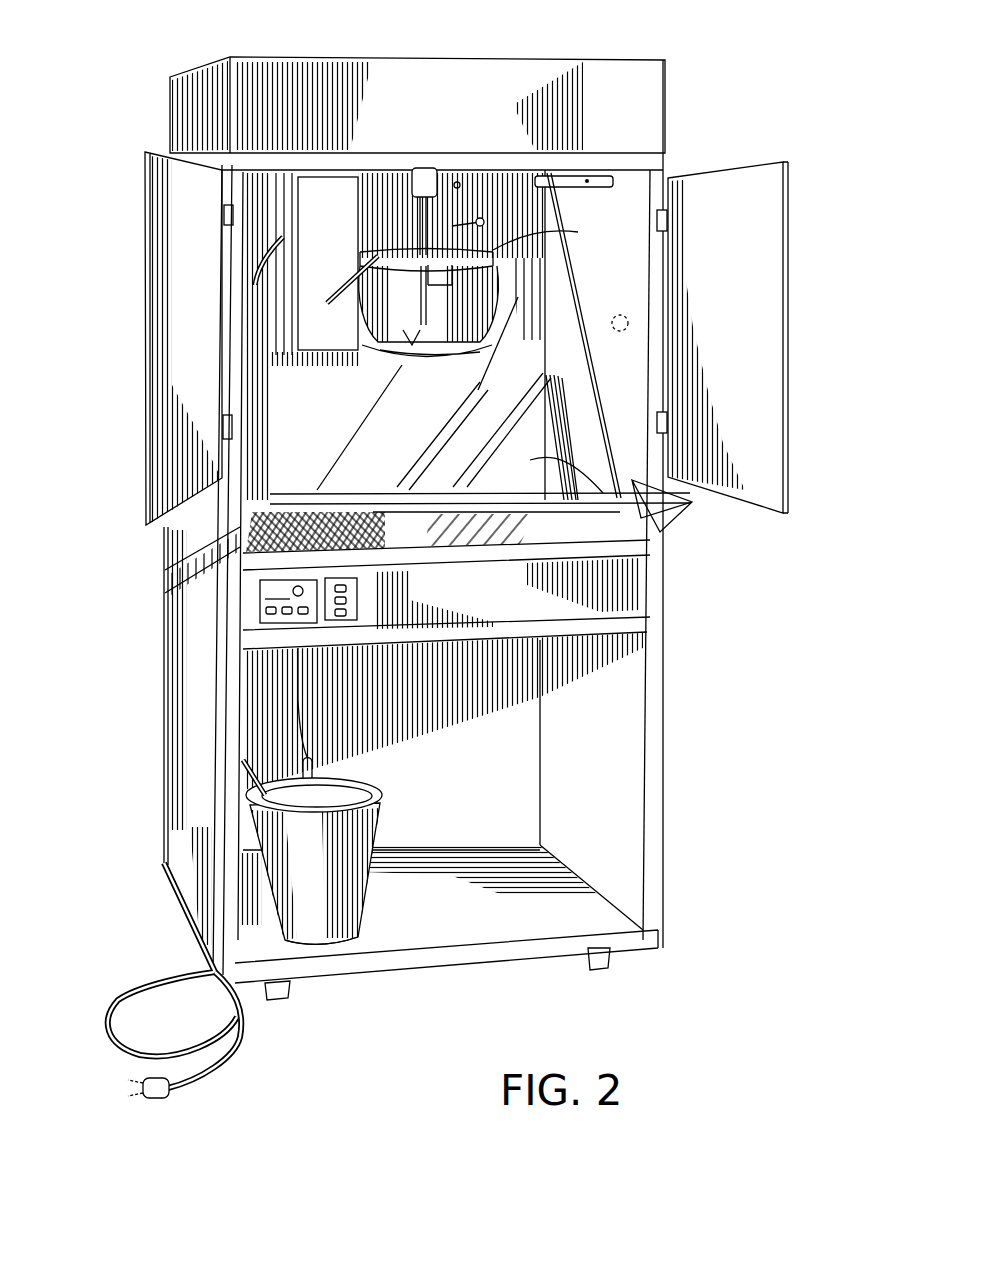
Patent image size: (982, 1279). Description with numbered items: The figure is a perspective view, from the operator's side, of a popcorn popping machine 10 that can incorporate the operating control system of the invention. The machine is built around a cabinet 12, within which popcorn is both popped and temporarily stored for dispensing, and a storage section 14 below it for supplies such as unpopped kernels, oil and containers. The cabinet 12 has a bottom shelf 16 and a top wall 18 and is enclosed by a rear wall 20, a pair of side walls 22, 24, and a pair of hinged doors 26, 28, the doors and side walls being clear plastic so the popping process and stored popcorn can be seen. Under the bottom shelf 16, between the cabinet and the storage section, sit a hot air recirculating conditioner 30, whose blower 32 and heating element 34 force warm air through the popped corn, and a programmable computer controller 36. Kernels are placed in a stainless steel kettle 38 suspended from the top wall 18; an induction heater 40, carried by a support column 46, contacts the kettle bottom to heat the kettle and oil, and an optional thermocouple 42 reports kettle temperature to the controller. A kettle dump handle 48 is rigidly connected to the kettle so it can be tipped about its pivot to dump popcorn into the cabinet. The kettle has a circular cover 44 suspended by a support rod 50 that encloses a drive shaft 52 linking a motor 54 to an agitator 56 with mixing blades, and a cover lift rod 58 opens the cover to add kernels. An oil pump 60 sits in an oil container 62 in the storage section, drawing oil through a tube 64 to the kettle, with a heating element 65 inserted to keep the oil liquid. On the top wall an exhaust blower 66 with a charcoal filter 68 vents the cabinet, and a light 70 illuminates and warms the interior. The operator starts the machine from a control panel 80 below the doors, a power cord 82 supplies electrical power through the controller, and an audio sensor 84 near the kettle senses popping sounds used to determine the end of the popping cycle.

The popcorn popping machine 10 is at (703, 66).
The cabinet 12 is at (658, 527).
The storage section 14 is at (627, 853).
The bottom shelf 16 is at (450, 487).
The top wall 18 is at (500, 185).
The rear wall 20 is at (532, 313).
The side wall 22 is at (638, 248).
The side wall 24 is at (175, 538).
The hinged door 26 is at (770, 490).
The hinged door 28 is at (177, 197).
The hot air recirculating conditioner 30 is at (303, 487).
The blower 32 is at (378, 522).
The heating element 34 is at (175, 553).
The computer controller 36 is at (240, 600).
The kettle 38 is at (490, 320).
The induction heater 40 is at (455, 350).
The thermocouple 42 is at (380, 345).
The cover 44 is at (493, 250).
The support column 46 is at (283, 237).
The kettle dump handle 48 is at (357, 275).
The support rod 50 is at (423, 215).
The drive shaft 52 is at (505, 334).
The motor 54 is at (420, 182).
The agitator 56 is at (410, 347).
The cover lift rod 58 is at (458, 172).
The oil pump 60 is at (245, 817).
The oil container 62 is at (330, 943).
The tube 64 is at (253, 387).
The heating element 65 is at (318, 763).
The exhaust blower 66 is at (567, 176).
The charcoal filter 68 is at (587, 180).
The light 70 is at (277, 75).
The control panel 80 is at (240, 575).
The power cord 82 is at (233, 1047).
The audio sensor 84 is at (640, 320).